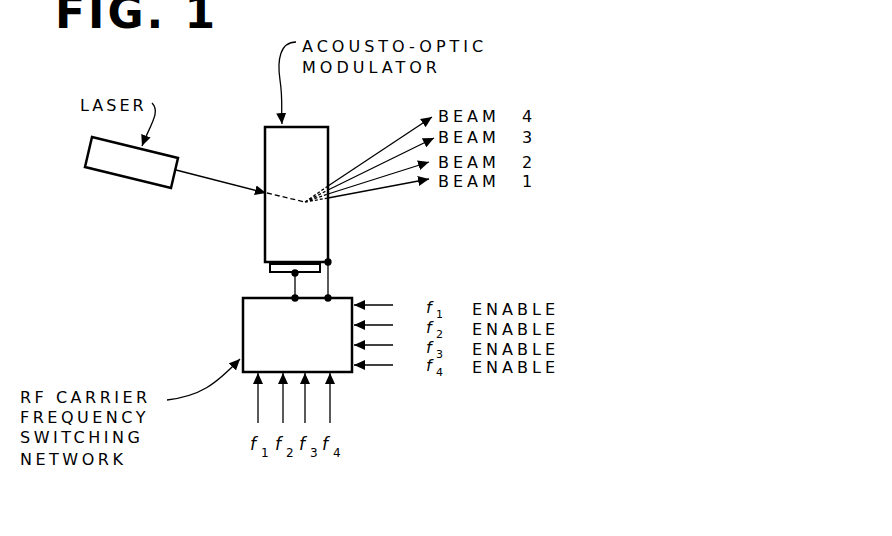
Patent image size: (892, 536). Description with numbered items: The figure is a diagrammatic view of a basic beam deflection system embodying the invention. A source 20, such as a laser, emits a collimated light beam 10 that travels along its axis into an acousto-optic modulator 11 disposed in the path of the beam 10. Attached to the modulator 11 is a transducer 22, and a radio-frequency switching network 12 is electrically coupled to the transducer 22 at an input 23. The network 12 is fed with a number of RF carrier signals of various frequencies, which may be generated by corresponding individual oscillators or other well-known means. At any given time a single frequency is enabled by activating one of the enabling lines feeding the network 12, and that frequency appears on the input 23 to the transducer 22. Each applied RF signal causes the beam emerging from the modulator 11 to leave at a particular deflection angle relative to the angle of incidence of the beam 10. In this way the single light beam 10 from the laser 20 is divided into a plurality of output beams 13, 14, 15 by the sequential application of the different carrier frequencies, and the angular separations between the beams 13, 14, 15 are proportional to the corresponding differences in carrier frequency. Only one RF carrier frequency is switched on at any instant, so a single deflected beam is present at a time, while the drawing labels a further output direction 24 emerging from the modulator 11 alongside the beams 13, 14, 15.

The collimated light beam 10 is at (205, 177).
The acousto-optic modulator 11 is at (330, 238).
The radio-frequency switching network 12 is at (342, 297).
The output beam 13 is at (378, 190).
The output beam 14 is at (383, 173).
The output beam 15 is at (360, 173).
The source 20 is at (148, 188).
The transducer 22 is at (268, 268).
The input 23 is at (325, 288).
The beam 4 24 is at (330, 184).